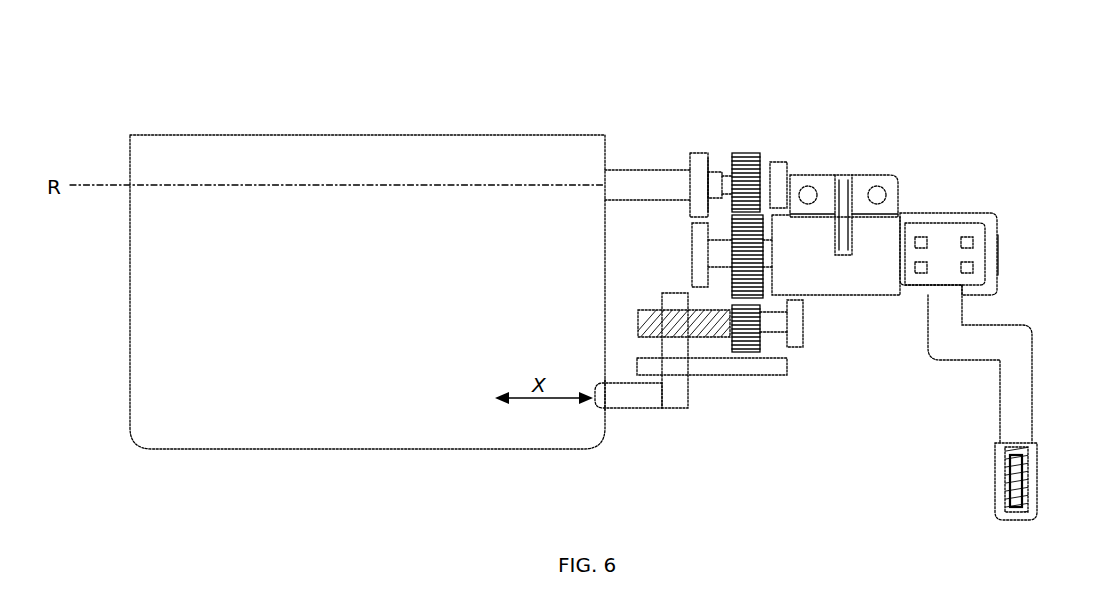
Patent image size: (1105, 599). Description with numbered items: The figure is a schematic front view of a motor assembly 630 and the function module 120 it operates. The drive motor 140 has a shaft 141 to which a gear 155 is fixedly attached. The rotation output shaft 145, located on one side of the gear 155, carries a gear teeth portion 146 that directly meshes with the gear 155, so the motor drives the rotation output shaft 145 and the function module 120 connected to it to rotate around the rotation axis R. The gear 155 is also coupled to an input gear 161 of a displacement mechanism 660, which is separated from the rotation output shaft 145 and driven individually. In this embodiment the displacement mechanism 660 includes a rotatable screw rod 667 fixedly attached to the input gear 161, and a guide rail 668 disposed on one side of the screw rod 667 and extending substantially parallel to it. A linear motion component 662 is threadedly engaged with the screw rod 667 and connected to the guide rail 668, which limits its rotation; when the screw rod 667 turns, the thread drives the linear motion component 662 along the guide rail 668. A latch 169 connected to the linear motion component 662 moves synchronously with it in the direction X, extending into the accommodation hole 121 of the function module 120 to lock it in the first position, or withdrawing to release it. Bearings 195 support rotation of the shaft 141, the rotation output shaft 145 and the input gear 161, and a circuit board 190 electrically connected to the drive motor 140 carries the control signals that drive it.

The function module 120 is at (296, 432).
The accommodation hole 121 is at (592, 402).
The drive motor 140 is at (940, 213).
The shaft 141 is at (735, 260).
The rotation output shaft 145 is at (668, 183).
The gear teeth portion 146 is at (740, 152).
The gear 155 is at (780, 272).
The input gear 161 is at (743, 354).
The latch 169 is at (623, 402).
The circuit board 190 is at (1020, 385).
The bearings 195 is at (780, 163).
The motor assembly 630 is at (944, 108).
The displacement mechanism 660 is at (733, 438).
The linear motion component 662 is at (675, 402).
The screw rod 667 is at (650, 308).
The guide rail 668 is at (776, 367).